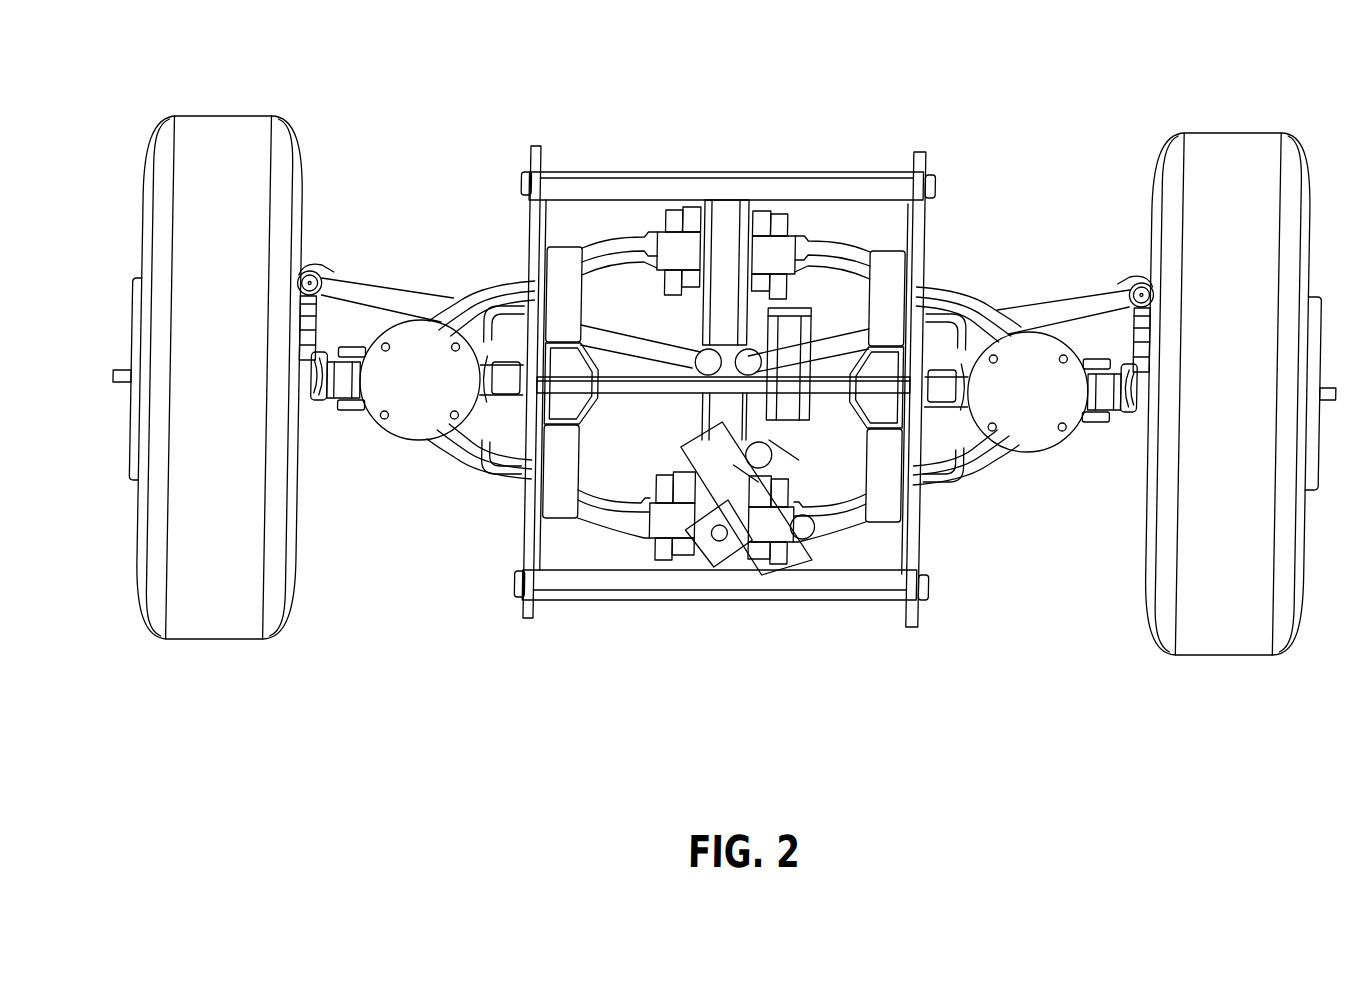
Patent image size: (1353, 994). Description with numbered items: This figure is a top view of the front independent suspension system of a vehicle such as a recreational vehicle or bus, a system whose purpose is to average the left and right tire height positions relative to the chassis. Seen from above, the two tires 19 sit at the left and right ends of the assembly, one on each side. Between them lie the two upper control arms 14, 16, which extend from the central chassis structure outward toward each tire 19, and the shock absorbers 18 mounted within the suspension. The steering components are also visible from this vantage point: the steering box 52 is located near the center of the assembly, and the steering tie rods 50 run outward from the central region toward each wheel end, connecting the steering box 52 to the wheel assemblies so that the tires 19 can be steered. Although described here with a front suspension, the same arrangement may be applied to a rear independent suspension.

The upper control arm 14 is at (481, 290).
The upper control arm 16 is at (974, 293).
The shock absorber 18 is at (986, 542).
The tire 19 is at (190, 429).
The steering tie rod 50 is at (401, 300).
The steering box 52 is at (827, 697).